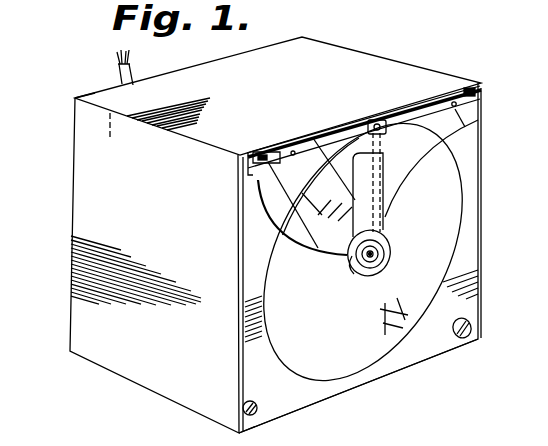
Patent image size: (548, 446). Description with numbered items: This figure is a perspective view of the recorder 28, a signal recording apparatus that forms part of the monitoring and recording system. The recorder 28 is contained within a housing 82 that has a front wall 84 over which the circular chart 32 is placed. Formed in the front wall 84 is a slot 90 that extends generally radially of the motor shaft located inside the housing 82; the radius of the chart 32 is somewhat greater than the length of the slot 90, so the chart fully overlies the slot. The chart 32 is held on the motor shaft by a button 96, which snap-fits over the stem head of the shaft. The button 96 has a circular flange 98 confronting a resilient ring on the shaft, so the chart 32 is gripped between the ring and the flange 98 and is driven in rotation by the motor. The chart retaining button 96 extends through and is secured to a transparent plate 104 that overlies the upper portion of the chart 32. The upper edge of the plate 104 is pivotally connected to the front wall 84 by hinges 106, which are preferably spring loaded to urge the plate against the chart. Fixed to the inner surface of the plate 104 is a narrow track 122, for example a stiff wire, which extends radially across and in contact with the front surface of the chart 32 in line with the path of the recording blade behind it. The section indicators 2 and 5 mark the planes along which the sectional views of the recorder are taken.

The recorder 28 is at (91, 89).
The housing 82 is at (80, 217).
The hinges 106 is at (272, 153).
The slot 90 is at (352, 188).
The transparent plate 104 is at (290, 208).
The track 122 is at (374, 182).
The circular flange 98 is at (392, 257).
The button 96 is at (368, 260).
The chart 32 is at (343, 356).
The front wall 84 is at (437, 341).
The section line 2- 2 is at (321, 58).
The section line 5- 5 is at (377, 146).